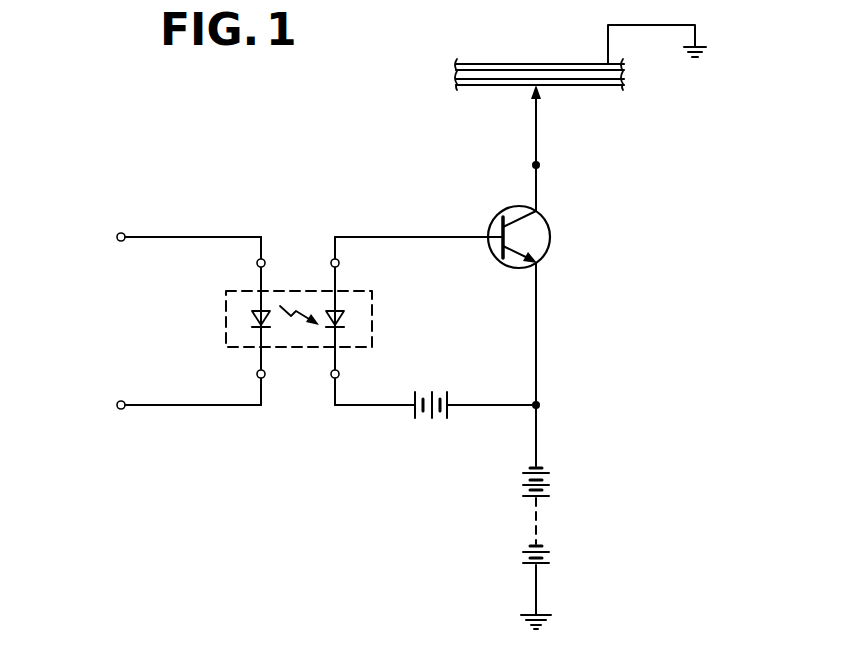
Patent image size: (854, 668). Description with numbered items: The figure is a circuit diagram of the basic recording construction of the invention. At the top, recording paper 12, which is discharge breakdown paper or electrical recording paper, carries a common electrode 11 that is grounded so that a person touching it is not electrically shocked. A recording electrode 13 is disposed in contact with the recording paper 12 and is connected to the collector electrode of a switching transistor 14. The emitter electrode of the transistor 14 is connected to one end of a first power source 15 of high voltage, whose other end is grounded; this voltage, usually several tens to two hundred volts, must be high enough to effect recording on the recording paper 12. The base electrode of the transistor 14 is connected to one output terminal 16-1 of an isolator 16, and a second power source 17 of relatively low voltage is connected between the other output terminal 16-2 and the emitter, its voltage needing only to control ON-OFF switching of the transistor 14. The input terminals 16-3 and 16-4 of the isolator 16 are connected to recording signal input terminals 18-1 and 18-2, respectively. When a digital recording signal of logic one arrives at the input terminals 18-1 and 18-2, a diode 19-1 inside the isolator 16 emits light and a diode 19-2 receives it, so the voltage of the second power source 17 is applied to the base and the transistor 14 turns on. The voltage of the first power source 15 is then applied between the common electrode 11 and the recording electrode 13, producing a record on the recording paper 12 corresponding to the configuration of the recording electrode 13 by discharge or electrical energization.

The common electrode 11 is at (500, 63).
The recording paper 12 is at (480, 90).
The recording electrode 13 is at (537, 128).
The switching transistor 14 is at (549, 224).
The first power source 15 is at (550, 486).
The isolator 16 is at (293, 360).
The output terminal 16-1 is at (340, 263).
The output terminal 16-2 is at (340, 374).
The input terminal 16-3 is at (256, 264).
The input terminal 16-4 is at (256, 374).
The second power source 17 is at (430, 419).
The recording signal input terminal 18-1 is at (117, 237).
The recording signal input terminal 18-2 is at (117, 405).
The light emitting diode 19-1 is at (251, 316).
The light receiving diode 19-2 is at (345, 316).